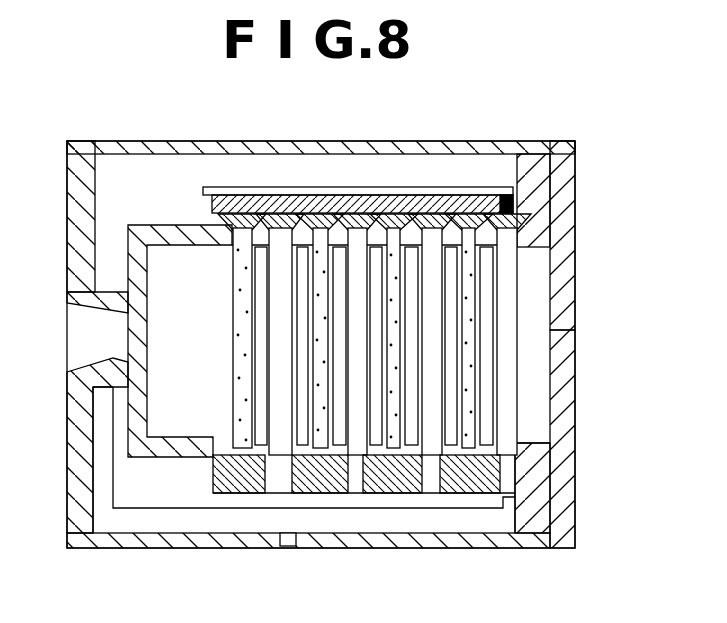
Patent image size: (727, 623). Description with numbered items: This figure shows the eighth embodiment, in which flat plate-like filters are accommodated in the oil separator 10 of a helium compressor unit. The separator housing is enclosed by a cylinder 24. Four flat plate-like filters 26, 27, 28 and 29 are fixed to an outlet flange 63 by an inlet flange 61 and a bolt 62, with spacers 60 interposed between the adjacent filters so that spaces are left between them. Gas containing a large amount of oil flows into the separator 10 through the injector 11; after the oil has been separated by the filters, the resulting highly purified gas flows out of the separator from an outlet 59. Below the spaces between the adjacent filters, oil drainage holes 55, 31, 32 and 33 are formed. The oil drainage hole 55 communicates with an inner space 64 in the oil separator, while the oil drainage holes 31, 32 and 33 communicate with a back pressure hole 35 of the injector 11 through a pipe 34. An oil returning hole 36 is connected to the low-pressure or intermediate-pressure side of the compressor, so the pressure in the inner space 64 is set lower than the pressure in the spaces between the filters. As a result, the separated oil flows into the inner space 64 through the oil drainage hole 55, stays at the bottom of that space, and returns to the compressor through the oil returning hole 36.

The oil separator 10 is at (131, 141).
The injector 11 is at (74, 320).
The cylinder 24 is at (525, 540).
The flat plate-like filter 26 is at (242, 240).
The flat plate-like filter 27 is at (319, 245).
The flat plate-like filter 28 is at (393, 230).
The flat plate-like filter 29 is at (467, 237).
The oil drainage hole 31 is at (334, 495).
The oil drainage hole 32 is at (407, 497).
The oil drainage hole 33 is at (481, 497).
The pipe 34 is at (179, 509).
The back pressure hole 35 is at (100, 385).
The oil returning hole 36 is at (295, 535).
The oil drainage hole 55 is at (262, 495).
The outlet 59 is at (577, 346).
The spacer 60 is at (279, 245).
The inlet flange 61 is at (147, 225).
The bolt 62 is at (204, 188).
The outlet flange 63 is at (553, 211).
The inner space 64 is at (127, 481).